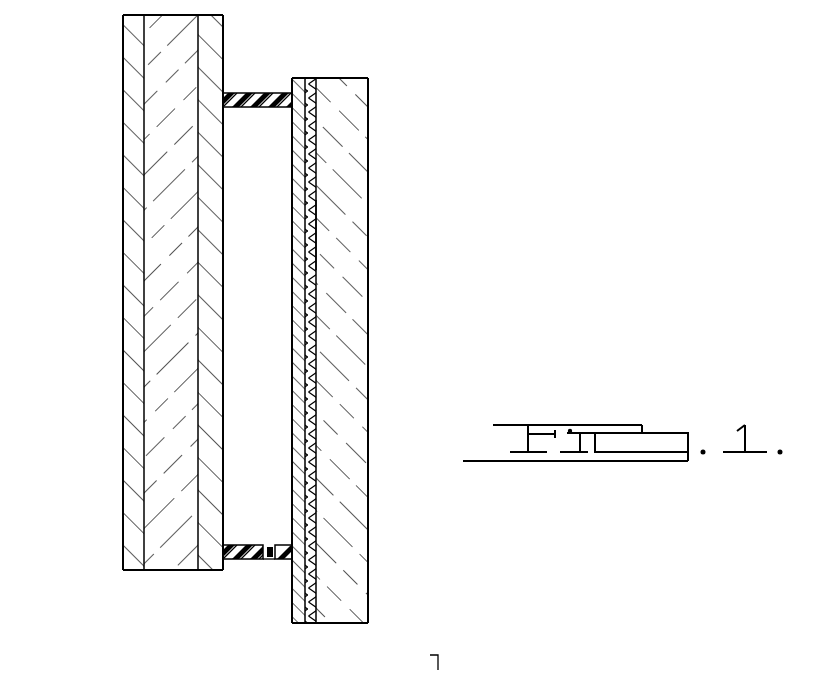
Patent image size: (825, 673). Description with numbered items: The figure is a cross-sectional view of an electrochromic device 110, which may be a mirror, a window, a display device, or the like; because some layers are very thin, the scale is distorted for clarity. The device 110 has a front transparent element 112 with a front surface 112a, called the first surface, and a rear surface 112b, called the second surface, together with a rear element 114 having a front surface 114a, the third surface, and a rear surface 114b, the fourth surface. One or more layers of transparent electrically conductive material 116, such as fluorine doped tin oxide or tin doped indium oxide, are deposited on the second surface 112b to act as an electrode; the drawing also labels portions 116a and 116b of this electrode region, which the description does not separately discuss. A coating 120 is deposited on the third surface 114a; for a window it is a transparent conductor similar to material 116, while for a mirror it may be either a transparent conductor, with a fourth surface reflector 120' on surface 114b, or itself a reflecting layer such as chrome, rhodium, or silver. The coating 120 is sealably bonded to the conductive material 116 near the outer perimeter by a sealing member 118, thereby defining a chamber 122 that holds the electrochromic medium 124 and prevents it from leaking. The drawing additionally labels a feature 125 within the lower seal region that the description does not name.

The electrochromic device 110 is at (46, 310).
The front transparent element 112 is at (353, 375).
The front surface of front transparent element 112a is at (369, 163).
The rear surface of front transparent element 112b is at (330, 236).
The rear element 114 is at (171, 292).
The front surface of rear element 114a is at (198, 44).
The rear surface of rear element 114b is at (143, 157).
The transparent electrically conductive material 116 is at (338, 375).
The electrode layer 116a is at (315, 500).
The alignment layer 116b is at (298, 505).
The sealing member 118 is at (262, 108).
The coating on third surface 120 is at (185, 583).
The fourth surface reflector 120' is at (86, 574).
The chamber 122 is at (273, 362).
The electrochromic medium 124 is at (275, 306).
The fill port 125 is at (267, 557).